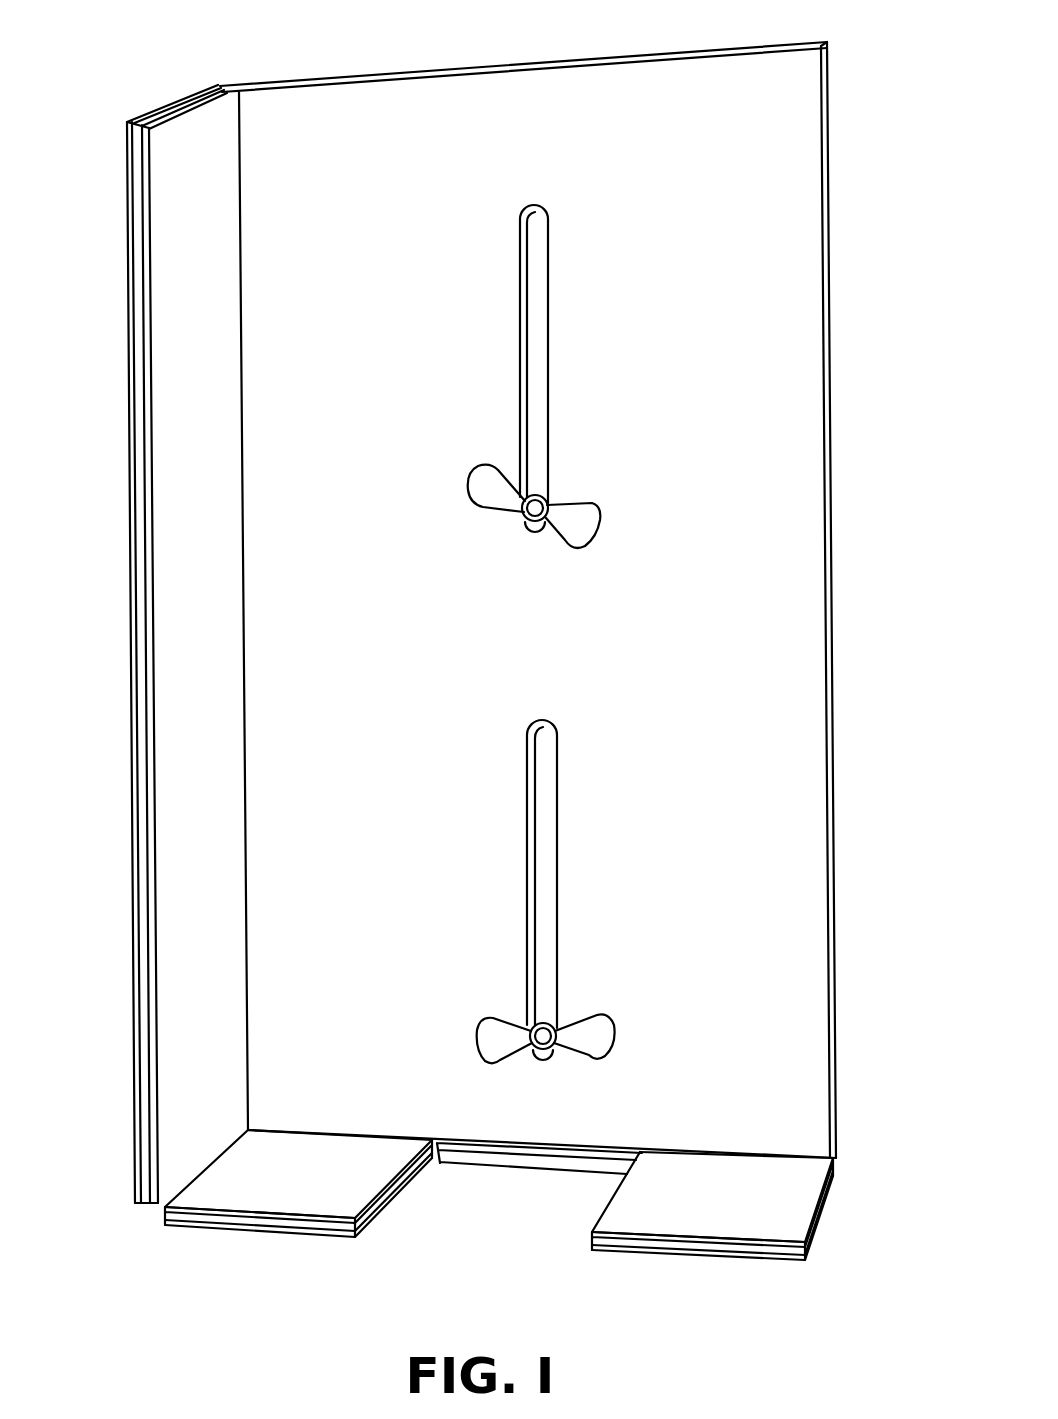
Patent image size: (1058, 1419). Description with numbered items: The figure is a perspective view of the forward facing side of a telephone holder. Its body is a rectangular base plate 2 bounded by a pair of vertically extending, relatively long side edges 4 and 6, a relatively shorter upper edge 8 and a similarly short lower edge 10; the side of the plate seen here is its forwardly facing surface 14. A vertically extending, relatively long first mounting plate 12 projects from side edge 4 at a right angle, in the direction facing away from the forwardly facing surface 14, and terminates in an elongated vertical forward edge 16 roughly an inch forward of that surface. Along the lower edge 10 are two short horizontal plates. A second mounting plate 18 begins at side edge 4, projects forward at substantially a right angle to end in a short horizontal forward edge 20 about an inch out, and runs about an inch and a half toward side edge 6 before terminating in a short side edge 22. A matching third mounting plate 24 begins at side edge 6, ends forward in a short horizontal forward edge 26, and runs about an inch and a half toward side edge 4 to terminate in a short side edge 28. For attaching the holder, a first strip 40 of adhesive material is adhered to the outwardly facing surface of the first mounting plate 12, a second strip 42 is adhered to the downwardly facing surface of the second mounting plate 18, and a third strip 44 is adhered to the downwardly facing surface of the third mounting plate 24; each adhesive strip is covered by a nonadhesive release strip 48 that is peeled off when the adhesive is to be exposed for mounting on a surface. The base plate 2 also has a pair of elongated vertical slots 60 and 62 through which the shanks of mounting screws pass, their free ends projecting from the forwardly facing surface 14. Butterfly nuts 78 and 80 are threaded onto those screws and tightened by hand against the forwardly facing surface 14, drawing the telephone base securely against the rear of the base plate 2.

The base plate 2 is at (797, 412).
The side edge 4 is at (242, 133).
The side edge 6 is at (828, 145).
The upper edge 8 is at (632, 57).
The lower edge 10 is at (358, 1135).
The first mounting plate 12 is at (167, 320).
The forwardly facing surface 14 is at (780, 838).
The forward edge 16 is at (145, 443).
The second mounting plate 18 is at (273, 1193).
The forward edge 20 is at (320, 1220).
The side edge 22 is at (395, 1173).
The third mounting plate 24 is at (787, 1200).
The forward edge 26 is at (620, 1235).
The side edge 28 is at (598, 1213).
The first strip of adhesive material 40 is at (135, 225).
The second strip of adhesive material 42 is at (193, 1218).
The third strip of adhesive material 44 is at (683, 1247).
The nonadhesive release strip 48 is at (133, 562).
The elongated vertical slot 60 is at (537, 240).
The elongated vertical slot 62 is at (538, 812).
The butterfly nut 78 is at (495, 462).
The butterfly nut 80 is at (592, 1012).